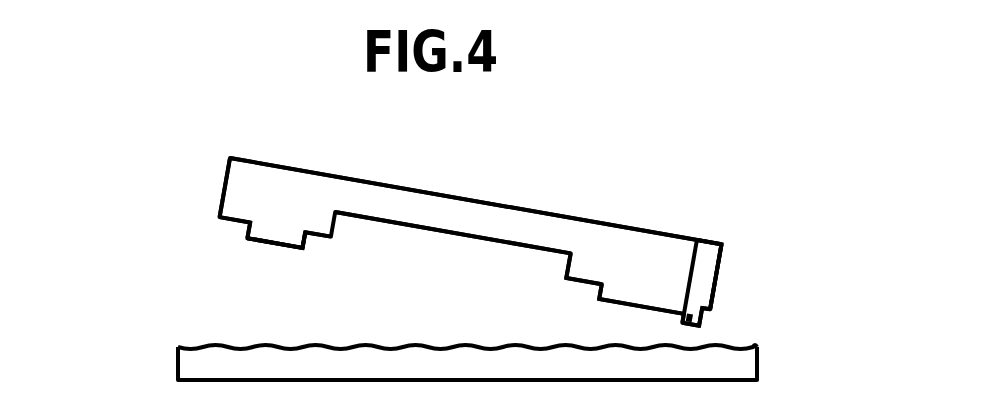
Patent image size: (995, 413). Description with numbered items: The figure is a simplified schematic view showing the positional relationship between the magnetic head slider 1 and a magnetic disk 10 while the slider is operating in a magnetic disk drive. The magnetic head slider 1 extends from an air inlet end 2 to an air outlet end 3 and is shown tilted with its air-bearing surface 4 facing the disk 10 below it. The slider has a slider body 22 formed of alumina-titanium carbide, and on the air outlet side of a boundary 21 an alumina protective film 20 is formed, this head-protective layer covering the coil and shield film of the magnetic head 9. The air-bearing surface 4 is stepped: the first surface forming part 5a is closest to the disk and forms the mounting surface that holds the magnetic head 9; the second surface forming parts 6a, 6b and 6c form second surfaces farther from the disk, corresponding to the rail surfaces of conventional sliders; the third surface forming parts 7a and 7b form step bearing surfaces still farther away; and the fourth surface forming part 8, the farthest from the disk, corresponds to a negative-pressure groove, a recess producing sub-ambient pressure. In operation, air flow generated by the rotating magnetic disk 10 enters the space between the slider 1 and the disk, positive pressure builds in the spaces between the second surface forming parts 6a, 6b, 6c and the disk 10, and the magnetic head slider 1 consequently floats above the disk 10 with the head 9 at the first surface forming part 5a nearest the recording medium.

The magnetic head slider 1 is at (240, 135).
The air inlet end 2 is at (220, 186).
The air outlet end 3 is at (722, 262).
The air-bearing surface 4 is at (392, 268).
The first surface forming part 5a is at (685, 323).
The second surface forming part 6a is at (620, 303).
The second surface forming part 6b is at (262, 244).
The second surface forming part 6c is at (272, 271).
The third surface forming part 7a is at (568, 281).
The third surface forming part 7b is at (222, 222).
The fourth surface forming part 8 is at (460, 234).
The magnetic head 9 is at (703, 315).
The magnetic disk 10 is at (178, 333).
The alumina protective film 20 is at (703, 290).
The boundary 21 is at (699, 240).
The slider body 22 is at (507, 205).